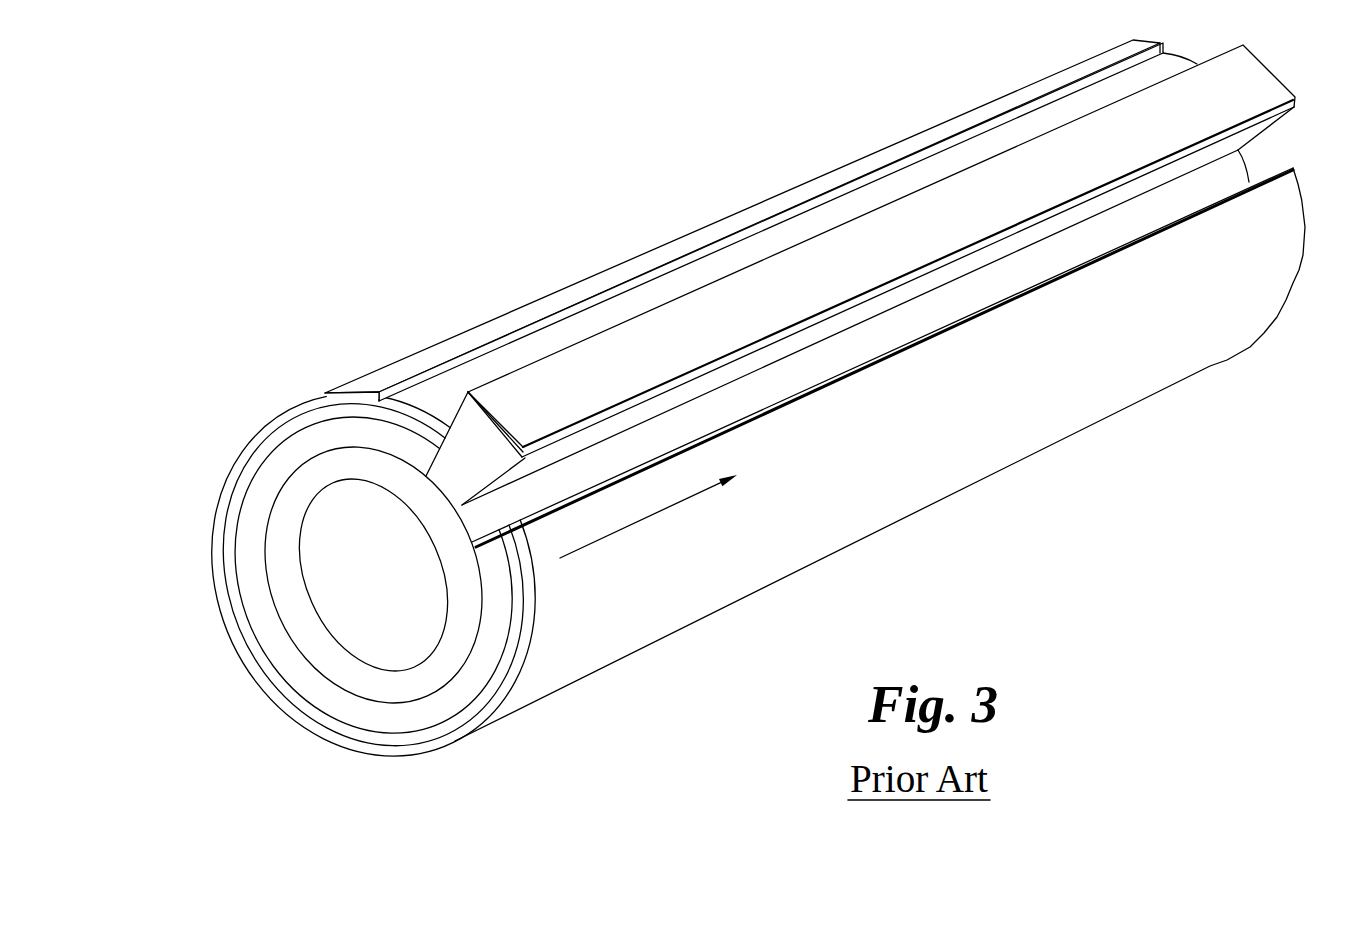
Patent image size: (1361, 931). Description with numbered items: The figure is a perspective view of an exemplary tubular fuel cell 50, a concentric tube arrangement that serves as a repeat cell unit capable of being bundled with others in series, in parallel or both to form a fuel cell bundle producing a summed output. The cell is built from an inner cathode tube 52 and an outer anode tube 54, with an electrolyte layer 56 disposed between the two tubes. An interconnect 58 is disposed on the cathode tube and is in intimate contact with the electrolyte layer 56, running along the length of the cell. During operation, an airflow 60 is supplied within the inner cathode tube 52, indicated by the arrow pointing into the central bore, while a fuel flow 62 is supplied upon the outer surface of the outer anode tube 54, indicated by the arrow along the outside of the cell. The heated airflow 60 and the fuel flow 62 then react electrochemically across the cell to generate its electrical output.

The tubular fuel cell 50 is at (378, 202).
The inner cathode tube 52 is at (293, 467).
The outer anode tube 54 is at (438, 747).
The electrolyte layer 56 is at (437, 397).
The interconnect 58 is at (1089, 166).
The airflow 60 is at (357, 580).
The fuel flow 62 is at (640, 522).